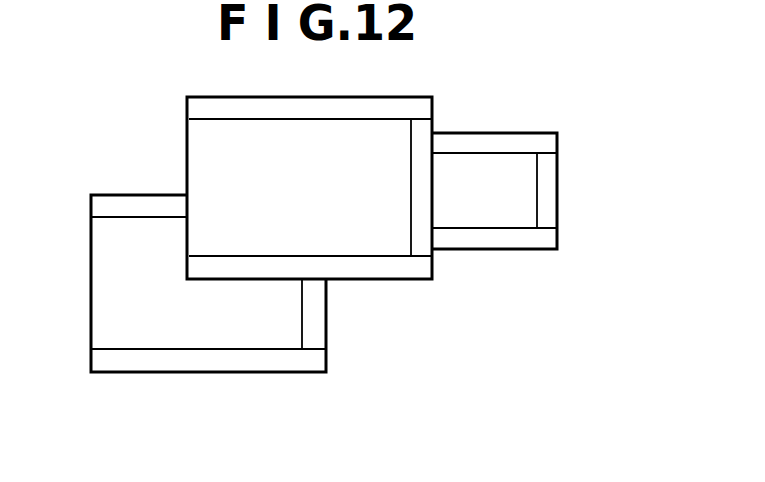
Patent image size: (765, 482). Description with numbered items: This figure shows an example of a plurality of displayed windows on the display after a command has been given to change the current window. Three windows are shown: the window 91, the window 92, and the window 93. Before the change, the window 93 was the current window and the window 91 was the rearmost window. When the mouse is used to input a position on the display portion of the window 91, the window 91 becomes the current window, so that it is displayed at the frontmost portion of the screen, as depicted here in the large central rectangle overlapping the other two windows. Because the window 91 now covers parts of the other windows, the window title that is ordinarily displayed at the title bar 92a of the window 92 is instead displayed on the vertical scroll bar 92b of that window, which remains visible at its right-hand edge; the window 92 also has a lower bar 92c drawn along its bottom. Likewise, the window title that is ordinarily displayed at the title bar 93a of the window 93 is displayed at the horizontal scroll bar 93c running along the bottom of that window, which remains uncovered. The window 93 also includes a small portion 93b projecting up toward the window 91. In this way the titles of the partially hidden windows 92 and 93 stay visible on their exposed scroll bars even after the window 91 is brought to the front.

The window 91 is at (224, 97).
The window 92 is at (452, 131).
The title bar 92a is at (532, 142).
The vertical scroll bar 92b is at (548, 215).
The lower wall of right side member 92c is at (470, 240).
The window 93 is at (110, 193).
The title bar 93a is at (160, 207).
The projection of left side member 93b is at (318, 338).
The horizontal scroll bar 93c is at (175, 358).